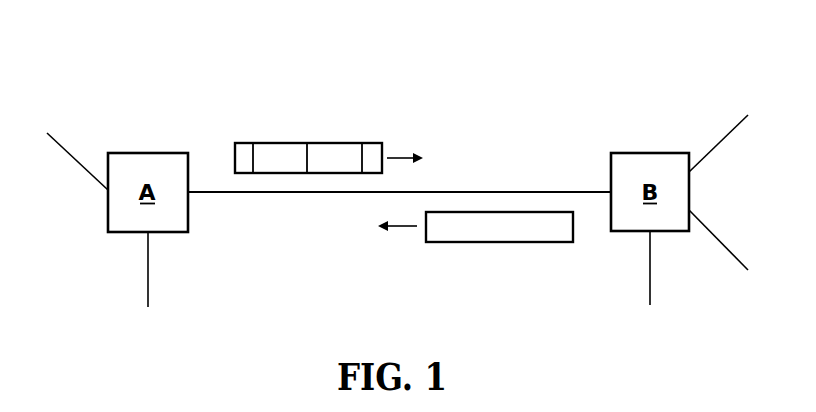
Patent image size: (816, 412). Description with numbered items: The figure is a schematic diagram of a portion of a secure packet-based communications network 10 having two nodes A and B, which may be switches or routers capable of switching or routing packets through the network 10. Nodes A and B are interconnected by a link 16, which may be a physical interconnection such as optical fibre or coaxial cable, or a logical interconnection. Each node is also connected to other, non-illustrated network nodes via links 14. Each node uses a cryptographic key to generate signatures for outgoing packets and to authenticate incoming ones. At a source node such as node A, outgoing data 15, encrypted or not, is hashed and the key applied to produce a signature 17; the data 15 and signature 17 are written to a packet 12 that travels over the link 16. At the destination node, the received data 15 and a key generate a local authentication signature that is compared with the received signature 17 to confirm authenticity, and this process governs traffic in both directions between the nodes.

The secure packet-based communications network 10 is at (503, 75).
The packet 12 is at (386, 184).
The links 14 is at (77, 162).
The data 15 is at (280, 142).
The link 16 is at (303, 194).
The signature 17 is at (333, 142).